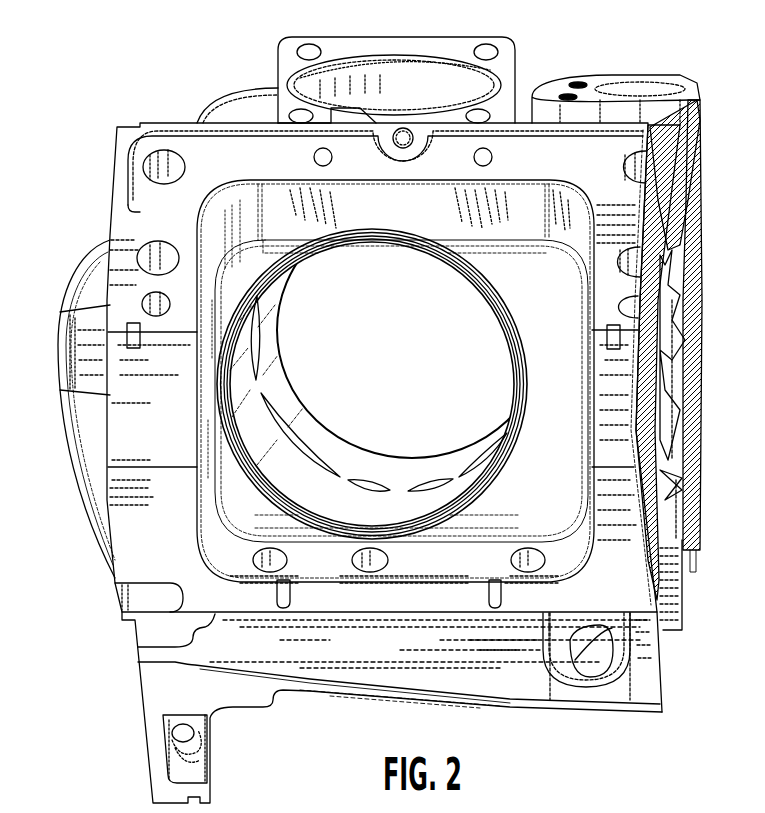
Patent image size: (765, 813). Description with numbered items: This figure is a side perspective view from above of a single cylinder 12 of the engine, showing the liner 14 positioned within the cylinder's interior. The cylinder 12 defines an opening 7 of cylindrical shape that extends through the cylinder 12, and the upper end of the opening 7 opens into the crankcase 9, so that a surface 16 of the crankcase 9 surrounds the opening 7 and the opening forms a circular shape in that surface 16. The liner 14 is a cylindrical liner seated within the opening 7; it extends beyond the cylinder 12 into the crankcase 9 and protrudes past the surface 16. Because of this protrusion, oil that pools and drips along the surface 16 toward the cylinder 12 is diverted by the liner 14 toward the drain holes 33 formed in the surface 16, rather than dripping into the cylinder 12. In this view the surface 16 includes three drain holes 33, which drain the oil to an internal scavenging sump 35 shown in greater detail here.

The cylinder 12 is at (61, 95).
The opening 7 is at (415, 284).
The crankcase 9 is at (511, 270).
The surface 16 is at (548, 283).
The liner 14 is at (522, 352).
The drain holes 33 is at (530, 560).
The internal scavenging sump 35 is at (490, 683).